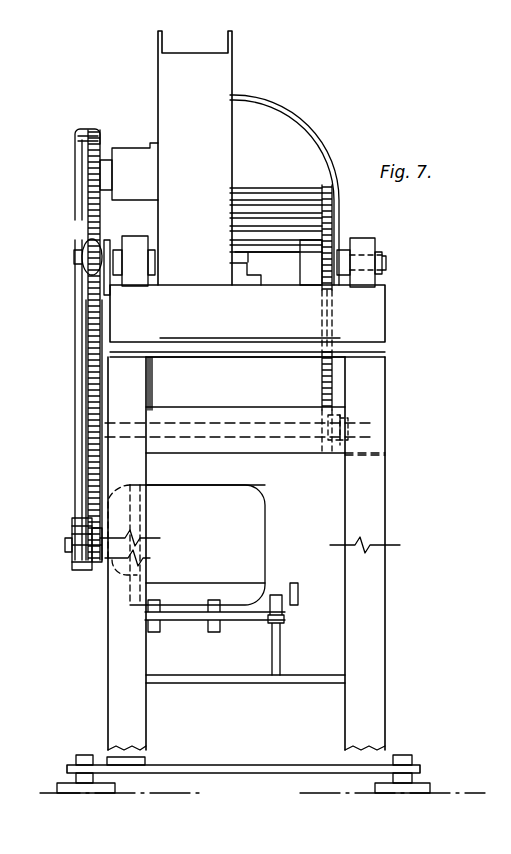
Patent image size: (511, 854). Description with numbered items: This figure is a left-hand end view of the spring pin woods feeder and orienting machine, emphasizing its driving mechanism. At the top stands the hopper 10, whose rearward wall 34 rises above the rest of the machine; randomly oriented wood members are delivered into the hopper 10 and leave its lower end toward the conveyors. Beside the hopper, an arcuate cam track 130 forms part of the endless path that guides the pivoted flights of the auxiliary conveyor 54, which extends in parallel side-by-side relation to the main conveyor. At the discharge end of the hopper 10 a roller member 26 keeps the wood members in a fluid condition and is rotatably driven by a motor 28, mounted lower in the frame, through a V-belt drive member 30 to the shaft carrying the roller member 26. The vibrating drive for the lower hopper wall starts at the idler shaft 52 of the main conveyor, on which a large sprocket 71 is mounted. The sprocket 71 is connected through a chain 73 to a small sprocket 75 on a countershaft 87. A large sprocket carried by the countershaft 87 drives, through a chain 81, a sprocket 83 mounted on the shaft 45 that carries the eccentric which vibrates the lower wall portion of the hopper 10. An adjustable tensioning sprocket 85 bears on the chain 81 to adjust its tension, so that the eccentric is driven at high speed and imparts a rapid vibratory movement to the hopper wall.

The hopper 10 is at (149, 70).
The rearward wall 34 is at (204, 122).
The cam track 130 is at (292, 115).
The auxiliary conveyor 54 is at (276, 182).
The large sprocket 71 is at (332, 215).
The chain 73 is at (320, 377).
The shaft 52 is at (386, 262).
The sprocket 83 is at (92, 166).
The roller member 26 is at (75, 172).
The shaft 45 is at (108, 170).
The adjustable tensioning sprocket 85 is at (84, 257).
The chain 81 is at (90, 352).
The V-belt drive member 30 is at (84, 491).
The motor 28 is at (206, 524).
The countershaft 87 is at (385, 427).
The small sprocket 75 is at (385, 454).